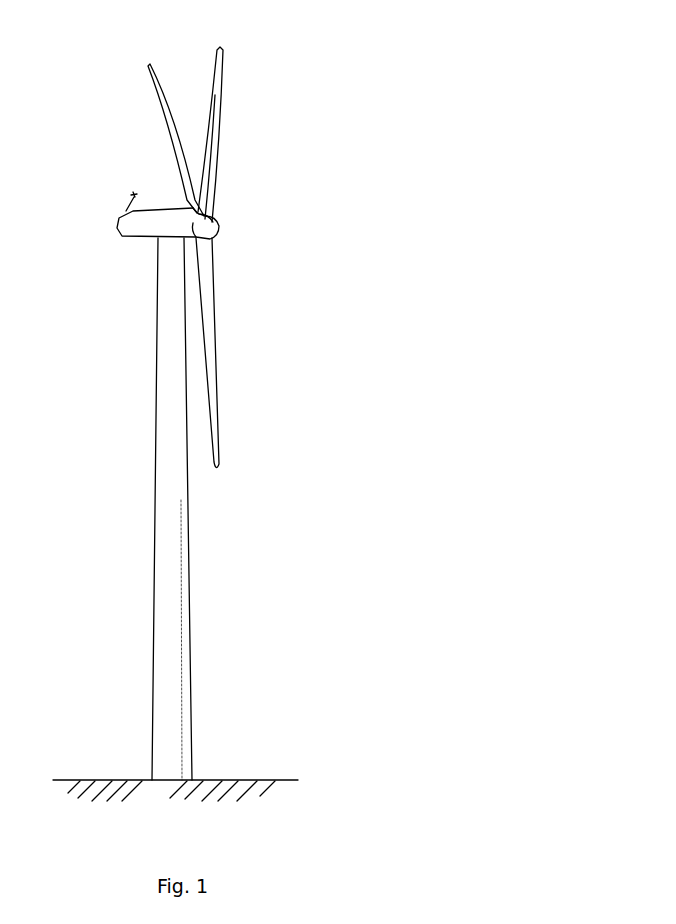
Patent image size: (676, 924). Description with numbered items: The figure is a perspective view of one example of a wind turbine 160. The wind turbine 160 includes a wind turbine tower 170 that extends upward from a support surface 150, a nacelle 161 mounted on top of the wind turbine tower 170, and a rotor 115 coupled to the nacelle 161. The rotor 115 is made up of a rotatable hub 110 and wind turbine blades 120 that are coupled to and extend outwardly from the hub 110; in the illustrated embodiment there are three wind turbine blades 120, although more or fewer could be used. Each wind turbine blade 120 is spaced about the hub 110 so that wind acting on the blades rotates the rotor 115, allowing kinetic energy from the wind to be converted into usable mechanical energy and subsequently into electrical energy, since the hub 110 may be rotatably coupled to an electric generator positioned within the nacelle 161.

The wind turbine 160 is at (300, 101).
The nacelle 161 is at (145, 241).
The hub 110 is at (222, 231).
The rotor 115 is at (226, 206).
The wind turbine blade 120 is at (215, 80).
The wind turbine tower 170 is at (160, 587).
The support surface 150 is at (110, 780).